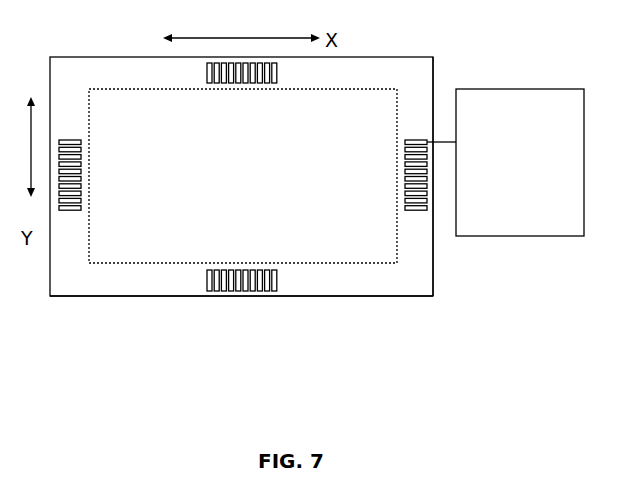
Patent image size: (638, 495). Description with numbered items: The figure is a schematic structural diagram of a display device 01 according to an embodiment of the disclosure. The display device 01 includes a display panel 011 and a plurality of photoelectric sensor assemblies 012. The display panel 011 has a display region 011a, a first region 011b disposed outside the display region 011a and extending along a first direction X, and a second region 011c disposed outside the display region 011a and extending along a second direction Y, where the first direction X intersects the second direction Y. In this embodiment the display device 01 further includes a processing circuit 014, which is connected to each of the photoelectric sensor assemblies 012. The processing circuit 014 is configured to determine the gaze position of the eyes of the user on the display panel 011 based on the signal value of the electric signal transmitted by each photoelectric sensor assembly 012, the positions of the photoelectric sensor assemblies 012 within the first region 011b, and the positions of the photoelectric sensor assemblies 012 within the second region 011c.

The display device 01 is at (58, 41).
The display panel 011 is at (427, 70).
The display region 011a is at (347, 240).
The first region 011b is at (170, 280).
The second region 011c is at (413, 228).
The photoelectric sensor assemblies 012 is at (417, 139).
The processing circuit 014 is at (505, 162).